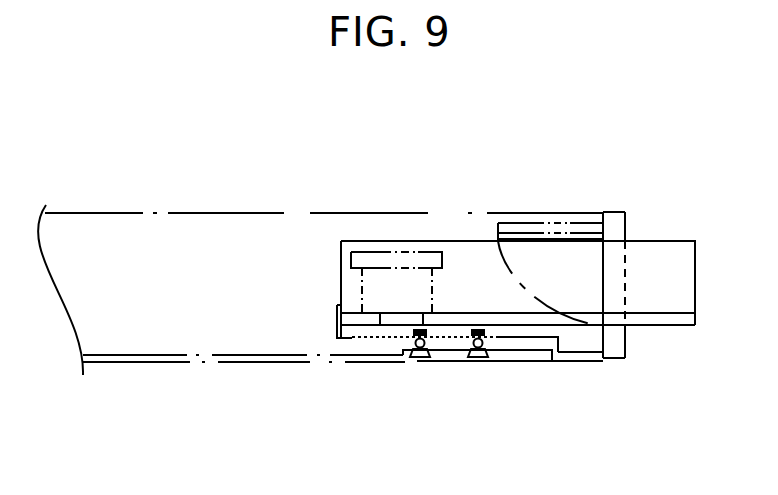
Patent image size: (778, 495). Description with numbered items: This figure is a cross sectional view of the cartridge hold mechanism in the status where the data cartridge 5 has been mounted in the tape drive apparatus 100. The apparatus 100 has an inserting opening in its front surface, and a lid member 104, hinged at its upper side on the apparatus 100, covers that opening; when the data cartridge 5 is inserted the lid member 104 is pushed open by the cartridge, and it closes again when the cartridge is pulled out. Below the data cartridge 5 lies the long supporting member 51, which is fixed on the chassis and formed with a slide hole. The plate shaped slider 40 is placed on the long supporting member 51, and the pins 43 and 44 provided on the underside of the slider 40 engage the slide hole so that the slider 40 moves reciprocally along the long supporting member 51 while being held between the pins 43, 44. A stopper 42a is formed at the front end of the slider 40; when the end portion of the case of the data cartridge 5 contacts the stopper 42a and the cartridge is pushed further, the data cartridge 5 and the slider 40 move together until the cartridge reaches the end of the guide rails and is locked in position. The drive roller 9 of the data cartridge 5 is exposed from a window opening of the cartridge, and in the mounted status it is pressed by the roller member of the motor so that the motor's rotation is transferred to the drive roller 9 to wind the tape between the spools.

The apparatus 100 is at (292, 213).
The data cartridge 5 is at (672, 241).
The lid member 104 is at (572, 238).
The drive roller 9 is at (428, 252).
The slider 40 is at (380, 340).
The stopper 42a is at (340, 331).
The pin 44 is at (420, 357).
The pin 43 is at (478, 357).
The long supporting member 51 is at (527, 353).